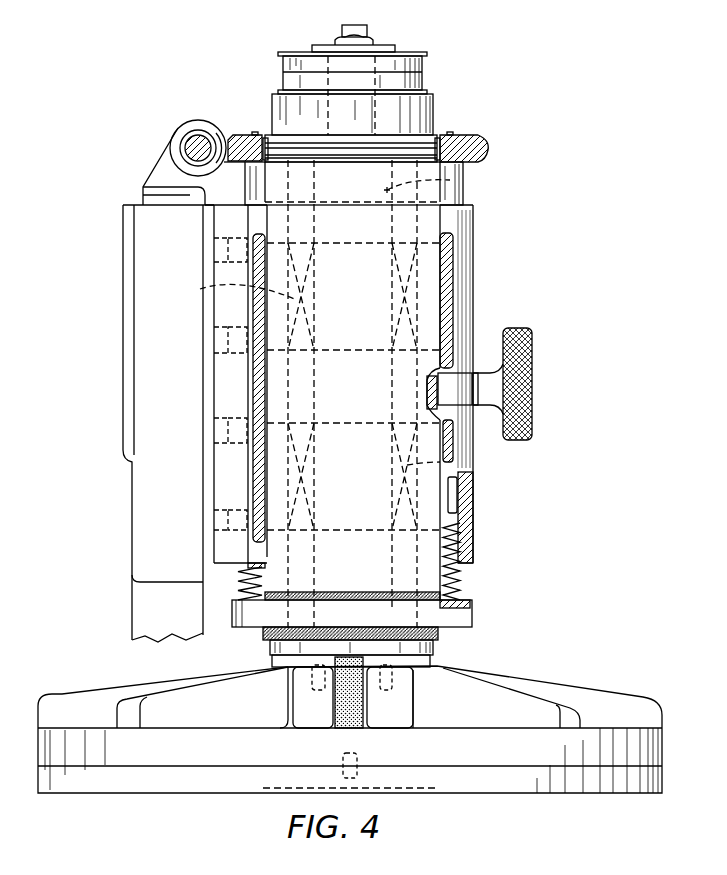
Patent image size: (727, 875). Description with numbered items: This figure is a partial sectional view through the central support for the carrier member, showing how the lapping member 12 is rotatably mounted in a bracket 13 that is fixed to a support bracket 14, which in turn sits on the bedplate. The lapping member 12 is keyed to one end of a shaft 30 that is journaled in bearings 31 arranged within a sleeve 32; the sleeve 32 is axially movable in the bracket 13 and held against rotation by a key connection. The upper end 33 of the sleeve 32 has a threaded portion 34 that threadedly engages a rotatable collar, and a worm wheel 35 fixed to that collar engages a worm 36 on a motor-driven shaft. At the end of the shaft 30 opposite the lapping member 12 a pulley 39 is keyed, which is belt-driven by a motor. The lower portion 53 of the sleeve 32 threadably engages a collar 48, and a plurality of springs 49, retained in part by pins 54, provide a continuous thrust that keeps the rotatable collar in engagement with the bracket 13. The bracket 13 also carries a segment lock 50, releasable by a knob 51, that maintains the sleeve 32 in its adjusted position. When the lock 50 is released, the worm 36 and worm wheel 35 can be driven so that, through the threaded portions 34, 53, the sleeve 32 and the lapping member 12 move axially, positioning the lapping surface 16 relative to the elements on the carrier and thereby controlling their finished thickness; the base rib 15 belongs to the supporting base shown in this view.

The lapping member 12 is at (546, 676).
The bracket 13 is at (464, 265).
The support bracket 14 is at (143, 488).
The base rib 15 is at (157, 692).
The lapping surface 16 is at (503, 782).
The shaft 30 is at (463, 181).
The bearings 31 is at (198, 291).
The sleeve 32 is at (432, 296).
The upper end 33 is at (430, 146).
The threaded portion 34 is at (268, 137).
The worm wheel 35 is at (490, 151).
The worm 36 is at (193, 143).
The pulley 39 is at (421, 73).
The collar 48 is at (243, 623).
The springs 49 is at (460, 586).
The segment lock 50 is at (522, 353).
The knob 51 is at (438, 390).
The lower portion 53 is at (437, 631).
The pins 54 is at (456, 523).